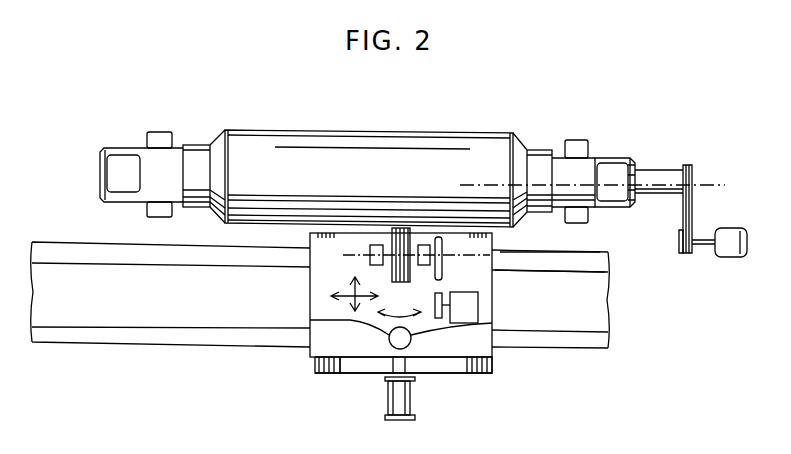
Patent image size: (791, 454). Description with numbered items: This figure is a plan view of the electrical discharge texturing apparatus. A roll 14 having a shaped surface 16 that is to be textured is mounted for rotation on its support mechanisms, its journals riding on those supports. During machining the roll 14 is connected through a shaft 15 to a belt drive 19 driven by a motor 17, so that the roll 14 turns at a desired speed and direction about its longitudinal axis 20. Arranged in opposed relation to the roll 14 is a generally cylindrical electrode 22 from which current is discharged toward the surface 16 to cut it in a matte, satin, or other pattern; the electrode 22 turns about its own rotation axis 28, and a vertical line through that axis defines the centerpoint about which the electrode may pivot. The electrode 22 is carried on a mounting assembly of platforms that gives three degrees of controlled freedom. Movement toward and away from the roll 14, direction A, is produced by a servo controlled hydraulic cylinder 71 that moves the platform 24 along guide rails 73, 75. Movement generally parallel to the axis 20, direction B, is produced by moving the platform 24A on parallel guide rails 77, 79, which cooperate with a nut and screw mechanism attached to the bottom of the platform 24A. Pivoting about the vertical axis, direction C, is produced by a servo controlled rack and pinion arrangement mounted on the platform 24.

The roll 14 is at (238, 130).
The shaft 15 is at (655, 170).
The shaped surface 16 is at (340, 133).
The motor 17 is at (727, 257).
The belt drive 19 is at (690, 215).
The longitudinal axis 20 is at (700, 185).
The electrode 22 is at (400, 228).
The platform 24 is at (492, 350).
The platform 24A is at (356, 373).
The rotation axis 28 is at (520, 252).
The servo controlled hydraulic cylinder 71 is at (410, 400).
The guide rail 73 is at (473, 375).
The guide rail 75 is at (323, 375).
The guiderail 77 is at (562, 345).
The guiderail 79 is at (540, 265).